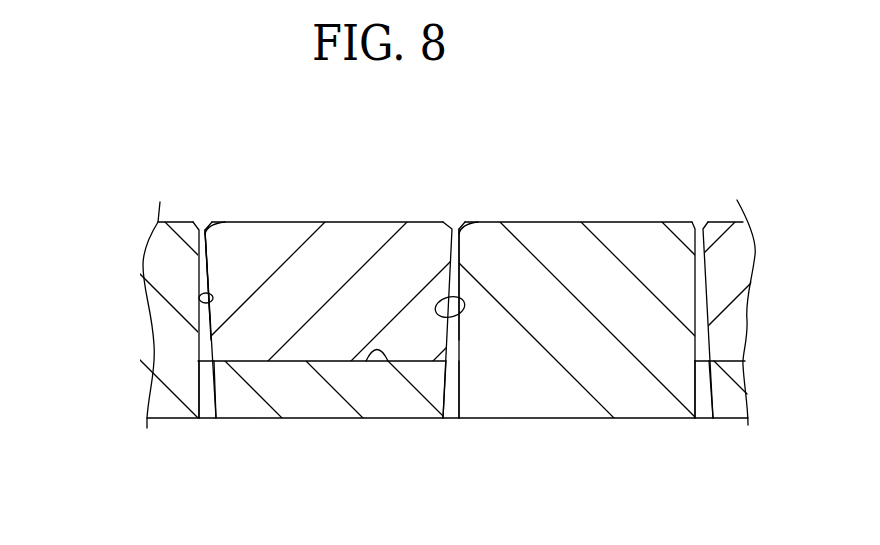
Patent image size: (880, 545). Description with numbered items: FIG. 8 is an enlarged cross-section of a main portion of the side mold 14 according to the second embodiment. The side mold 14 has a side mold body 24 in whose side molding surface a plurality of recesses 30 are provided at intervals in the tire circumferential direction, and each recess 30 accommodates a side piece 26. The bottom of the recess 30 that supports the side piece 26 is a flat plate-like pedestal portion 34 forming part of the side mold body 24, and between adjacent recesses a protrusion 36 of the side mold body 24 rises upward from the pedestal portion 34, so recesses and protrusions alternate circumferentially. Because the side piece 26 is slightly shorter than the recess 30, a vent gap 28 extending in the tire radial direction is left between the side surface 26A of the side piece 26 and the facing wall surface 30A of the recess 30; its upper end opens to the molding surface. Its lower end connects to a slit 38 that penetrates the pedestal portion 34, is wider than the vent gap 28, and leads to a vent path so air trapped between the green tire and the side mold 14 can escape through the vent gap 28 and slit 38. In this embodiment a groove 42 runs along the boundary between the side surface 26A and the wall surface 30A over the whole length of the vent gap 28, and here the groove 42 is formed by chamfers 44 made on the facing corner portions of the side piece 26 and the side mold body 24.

The side mold 14 is at (409, 162).
The side mold body 24 is at (618, 412).
The side piece 26 is at (340, 240).
The side surface of the side piece 26A is at (197, 257).
The vent gap 28 is at (207, 255).
The recess 30 is at (384, 363).
The wall surface of the recess 30A is at (195, 310).
The pedestal portion 34 is at (302, 400).
The protrusion 36 is at (168, 237).
The slit 38 is at (205, 410).
The groove 42 is at (203, 220).
The chamfer 44 is at (440, 221).